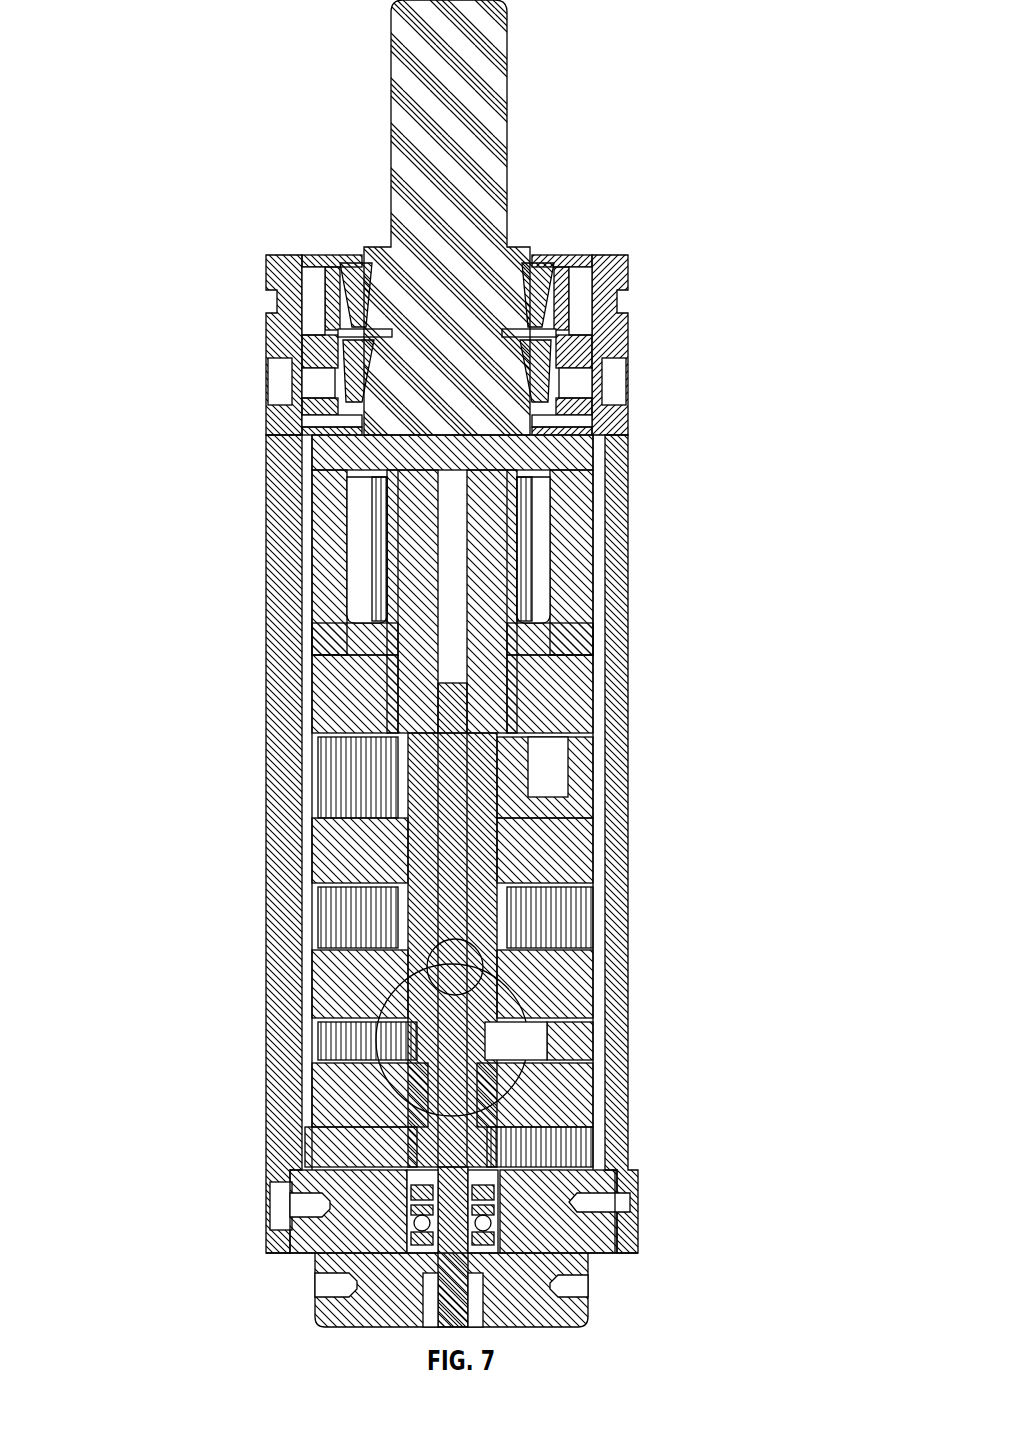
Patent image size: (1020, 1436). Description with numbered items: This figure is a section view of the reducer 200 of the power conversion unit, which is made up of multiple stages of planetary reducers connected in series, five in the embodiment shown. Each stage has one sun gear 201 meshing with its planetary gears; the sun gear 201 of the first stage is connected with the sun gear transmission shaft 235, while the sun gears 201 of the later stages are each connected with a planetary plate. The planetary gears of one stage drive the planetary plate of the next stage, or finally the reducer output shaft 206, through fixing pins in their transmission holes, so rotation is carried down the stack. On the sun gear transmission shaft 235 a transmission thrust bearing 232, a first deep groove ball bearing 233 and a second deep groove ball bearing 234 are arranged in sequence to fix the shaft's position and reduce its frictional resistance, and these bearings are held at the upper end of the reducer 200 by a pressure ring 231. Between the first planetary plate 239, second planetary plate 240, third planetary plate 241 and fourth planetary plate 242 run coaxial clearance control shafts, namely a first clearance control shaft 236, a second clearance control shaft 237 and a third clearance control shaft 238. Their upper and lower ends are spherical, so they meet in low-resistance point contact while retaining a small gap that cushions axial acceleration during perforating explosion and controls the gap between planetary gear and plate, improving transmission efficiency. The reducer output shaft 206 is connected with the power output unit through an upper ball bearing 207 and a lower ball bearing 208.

The reducer 200 is at (268, 443).
The sun gear 201 is at (497, 567).
The reducer output shaft 206 is at (470, 47).
The upper ball bearing 207 is at (537, 362).
The lower ball bearing 208 is at (537, 285).
The pressure ring 231 is at (360, 1297).
The transmission thrust bearing 232 is at (547, 1273).
The first deep groove ball bearing 233 is at (533, 1227).
The second deep groove ball bearing 234 is at (480, 1195).
The sun gear transmission shaft 235 is at (453, 1155).
The first clearance control shaft 236 is at (500, 1048).
The second clearance control shaft 237 is at (390, 883).
The third clearance control shaft 238 is at (452, 763).
The first planetary plate 239 is at (330, 1090).
The second planetary plate 240 is at (330, 975).
The third planetary plate 241 is at (330, 863).
The fourth planetary plate 242 is at (330, 684).